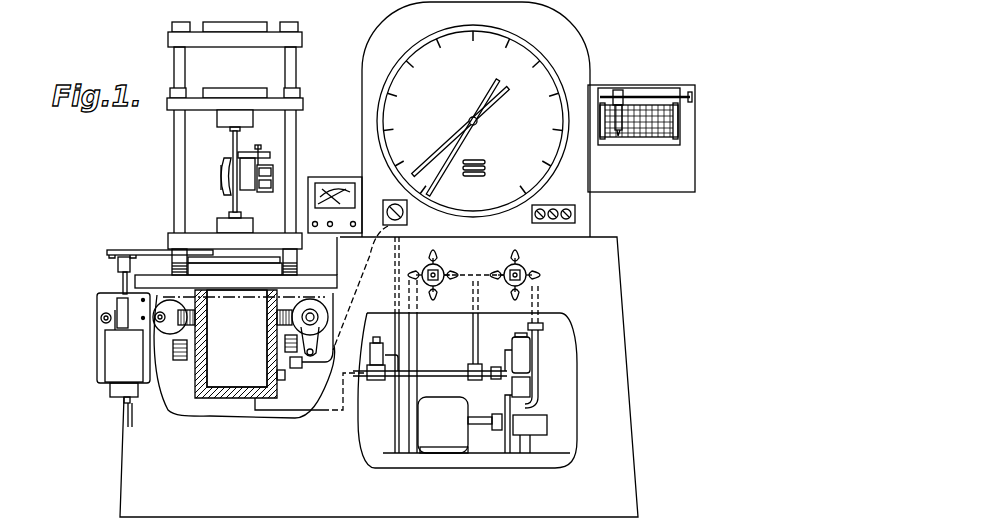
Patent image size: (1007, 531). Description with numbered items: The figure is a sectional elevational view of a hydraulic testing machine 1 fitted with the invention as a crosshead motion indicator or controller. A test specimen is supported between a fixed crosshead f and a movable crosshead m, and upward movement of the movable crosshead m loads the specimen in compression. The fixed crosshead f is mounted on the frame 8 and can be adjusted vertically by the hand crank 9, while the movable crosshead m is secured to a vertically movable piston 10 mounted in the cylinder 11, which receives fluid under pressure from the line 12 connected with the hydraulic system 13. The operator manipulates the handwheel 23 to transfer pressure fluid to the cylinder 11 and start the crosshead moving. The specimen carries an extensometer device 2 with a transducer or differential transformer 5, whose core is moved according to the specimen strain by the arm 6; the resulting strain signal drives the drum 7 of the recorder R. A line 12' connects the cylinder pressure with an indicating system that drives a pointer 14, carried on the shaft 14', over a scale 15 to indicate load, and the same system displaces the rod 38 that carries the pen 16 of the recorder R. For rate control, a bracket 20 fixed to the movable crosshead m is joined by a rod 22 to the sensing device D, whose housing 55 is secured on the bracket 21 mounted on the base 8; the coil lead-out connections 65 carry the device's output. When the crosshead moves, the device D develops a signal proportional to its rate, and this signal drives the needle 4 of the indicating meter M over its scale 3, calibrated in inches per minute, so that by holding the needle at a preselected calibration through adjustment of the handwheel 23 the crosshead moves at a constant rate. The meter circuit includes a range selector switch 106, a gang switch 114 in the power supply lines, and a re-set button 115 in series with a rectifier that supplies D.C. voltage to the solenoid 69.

The cabinet 1 is at (637, 390).
The movable crosshead m is at (168, 42).
The fixed crosshead f is at (168, 103).
The transducer or differential transformer 5 is at (233, 137).
The extensometer device 2 is at (249, 182).
The arm 6 is at (245, 157).
The indicating meter M is at (313, 177).
The scale 3 is at (322, 196).
The needle 4 is at (333, 205).
The gang switch 114 is at (315, 228).
The range selector switch 106 is at (330, 228).
The re-set button 115 is at (356, 222).
The scale 15 is at (392, 97).
The pointer 14 is at (461, 132).
The shaft 14' is at (462, 137).
The recorder R is at (686, 162).
The drum 7 is at (650, 133).
The rod 38 is at (605, 93).
The pen 16 is at (622, 90).
The bracket or control member 20 is at (117, 248).
The rod 22 is at (116, 281).
The sensing device D is at (119, 350).
The housing 55 is at (100, 362).
The bracket 21 is at (100, 372).
The solenoid 69 is at (100, 318).
The lead-out connections 65 is at (137, 400).
The cylinder 11 is at (215, 396).
The piston 10 is at (236, 344).
The hand crank 9 is at (312, 357).
The line 12 is at (311, 374).
The line 12' is at (362, 288).
The frame or base 8 is at (256, 458).
The handwheel 23 is at (550, 276).
The hydraulic system 13 is at (466, 344).